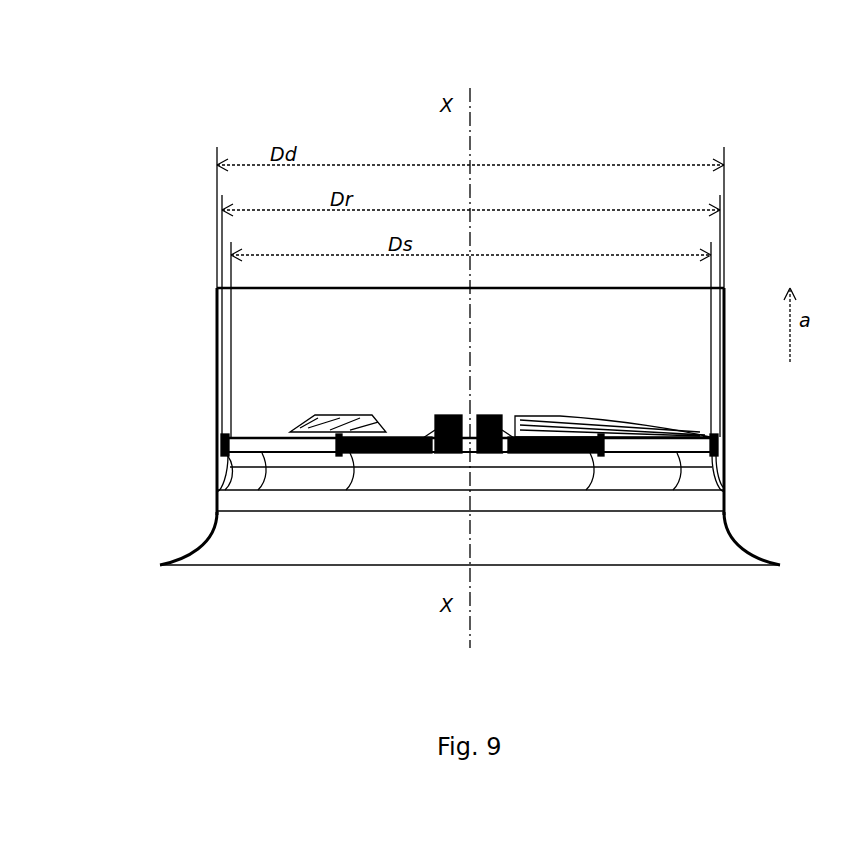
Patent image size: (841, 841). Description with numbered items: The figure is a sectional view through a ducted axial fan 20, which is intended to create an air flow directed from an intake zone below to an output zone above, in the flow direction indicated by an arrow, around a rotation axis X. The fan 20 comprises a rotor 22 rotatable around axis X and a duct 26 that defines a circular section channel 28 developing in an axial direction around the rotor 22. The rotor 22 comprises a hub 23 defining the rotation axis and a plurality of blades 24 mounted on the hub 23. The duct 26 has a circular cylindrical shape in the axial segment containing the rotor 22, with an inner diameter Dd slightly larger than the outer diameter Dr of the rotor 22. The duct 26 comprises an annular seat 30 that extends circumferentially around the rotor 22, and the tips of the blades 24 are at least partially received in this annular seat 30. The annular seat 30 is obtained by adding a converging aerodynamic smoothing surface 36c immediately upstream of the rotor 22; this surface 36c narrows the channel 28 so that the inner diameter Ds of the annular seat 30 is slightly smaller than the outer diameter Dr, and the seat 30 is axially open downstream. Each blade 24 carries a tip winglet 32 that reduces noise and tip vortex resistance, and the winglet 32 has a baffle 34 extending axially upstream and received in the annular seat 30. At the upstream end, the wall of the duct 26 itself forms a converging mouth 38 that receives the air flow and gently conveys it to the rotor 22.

The ducted axial fan 20 is at (158, 180).
The rotor 22 is at (640, 455).
The hub 23 is at (465, 415).
The blades 24 is at (290, 432).
The duct 26 is at (213, 403).
The channel 28 is at (290, 325).
The annular seat 30 is at (213, 470).
The tip winglet 32 is at (726, 425).
The baffle 34 is at (727, 468).
The converging aerodynamic smoothing surface 36c is at (318, 480).
The converging mouth 38 is at (216, 548).